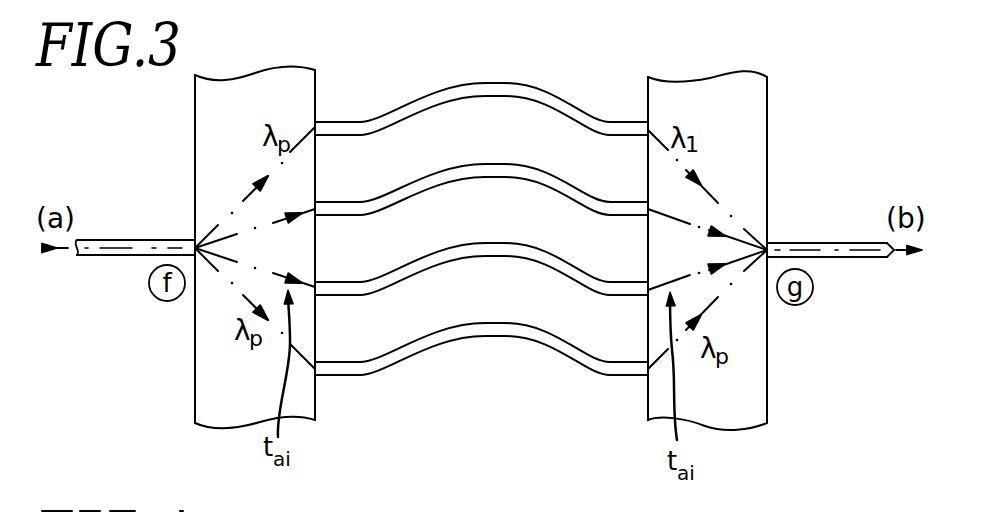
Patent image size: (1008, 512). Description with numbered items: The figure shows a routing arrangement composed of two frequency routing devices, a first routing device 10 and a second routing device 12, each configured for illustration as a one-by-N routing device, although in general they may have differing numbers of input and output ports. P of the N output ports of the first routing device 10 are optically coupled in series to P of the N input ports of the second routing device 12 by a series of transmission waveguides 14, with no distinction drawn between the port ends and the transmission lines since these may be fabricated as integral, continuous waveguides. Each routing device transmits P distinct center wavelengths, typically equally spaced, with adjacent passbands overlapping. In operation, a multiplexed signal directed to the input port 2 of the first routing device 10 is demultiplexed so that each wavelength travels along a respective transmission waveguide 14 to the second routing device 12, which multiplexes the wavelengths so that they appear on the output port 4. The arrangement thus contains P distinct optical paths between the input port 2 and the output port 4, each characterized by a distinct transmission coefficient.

The input port 2 is at (100, 256).
The output port 4 is at (769, 247).
The first routing device 10 is at (195, 385).
The second routing device 12 is at (768, 152).
The transmission waveguides 14 is at (479, 83).